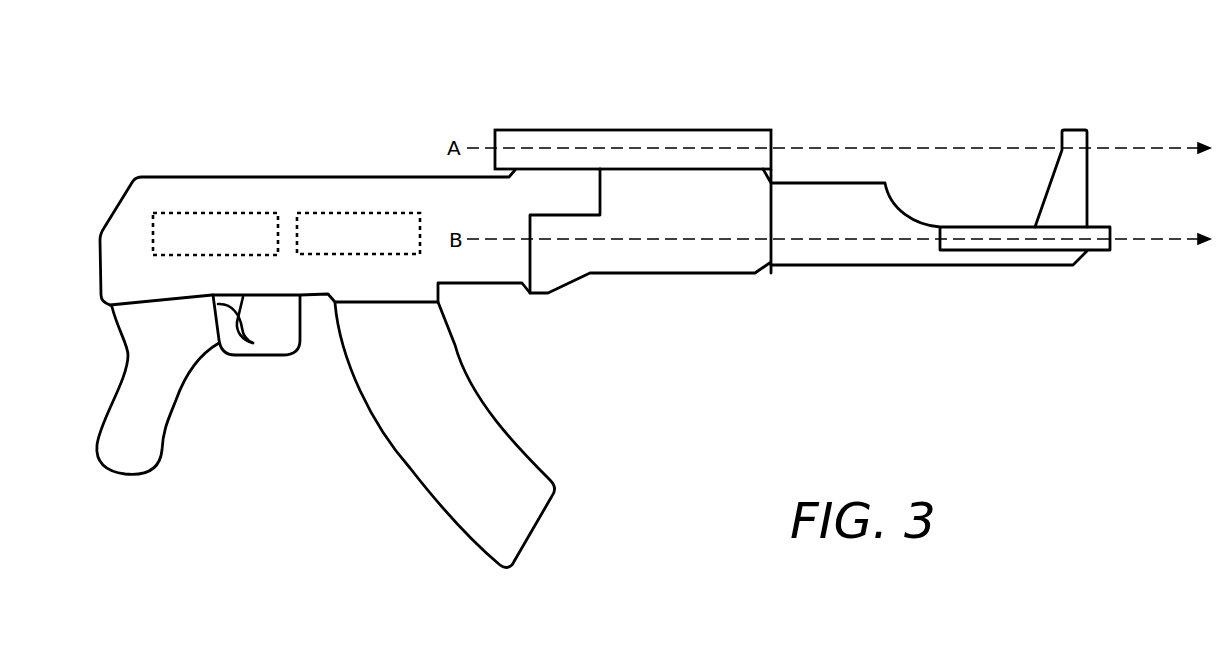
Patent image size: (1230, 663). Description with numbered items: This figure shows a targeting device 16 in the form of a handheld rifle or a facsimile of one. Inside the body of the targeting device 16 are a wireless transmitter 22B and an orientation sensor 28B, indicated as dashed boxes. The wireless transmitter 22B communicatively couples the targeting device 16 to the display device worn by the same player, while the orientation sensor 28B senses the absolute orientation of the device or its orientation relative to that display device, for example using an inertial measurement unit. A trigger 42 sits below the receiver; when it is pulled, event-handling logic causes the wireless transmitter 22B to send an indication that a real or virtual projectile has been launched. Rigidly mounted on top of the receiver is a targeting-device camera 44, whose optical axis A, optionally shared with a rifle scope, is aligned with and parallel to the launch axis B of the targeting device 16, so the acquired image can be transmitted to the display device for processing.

The targeting device 16 is at (1160, 93).
The wireless transmitter 22B is at (215, 234).
The orientation sensor 28B is at (358, 233).
The trigger 42 is at (238, 322).
The targeting-device camera 44 is at (627, 130).